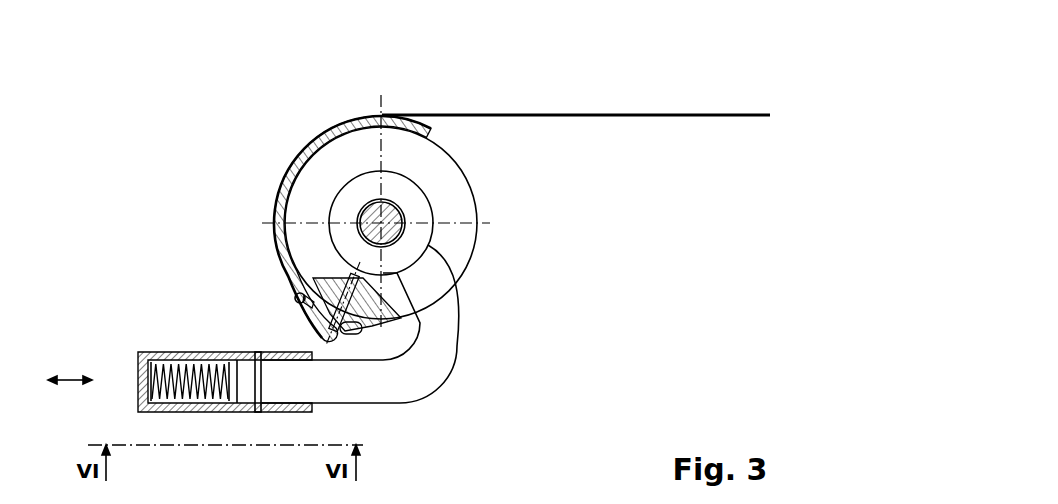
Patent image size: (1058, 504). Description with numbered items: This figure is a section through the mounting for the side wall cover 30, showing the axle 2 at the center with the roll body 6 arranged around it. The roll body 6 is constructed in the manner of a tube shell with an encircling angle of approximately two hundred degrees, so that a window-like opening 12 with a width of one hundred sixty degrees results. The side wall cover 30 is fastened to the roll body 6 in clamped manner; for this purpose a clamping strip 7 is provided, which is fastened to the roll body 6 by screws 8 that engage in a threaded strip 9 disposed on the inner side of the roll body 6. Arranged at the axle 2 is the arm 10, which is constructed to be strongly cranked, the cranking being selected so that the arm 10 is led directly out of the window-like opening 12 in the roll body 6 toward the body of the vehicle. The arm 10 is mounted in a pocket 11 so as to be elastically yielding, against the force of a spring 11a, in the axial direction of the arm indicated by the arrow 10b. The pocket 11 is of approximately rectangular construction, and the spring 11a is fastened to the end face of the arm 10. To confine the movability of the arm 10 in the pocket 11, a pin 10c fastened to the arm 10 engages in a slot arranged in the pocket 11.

The axle 2 is at (408, 207).
The roll body 6 is at (352, 118).
The clamping strip 7 is at (298, 298).
The screws 8 is at (332, 342).
The threaded strip 9 is at (410, 316).
The arm 10 is at (424, 374).
The arrow 10b is at (68, 380).
The pin 10c is at (255, 352).
The pocket 11 is at (184, 352).
The spring 11a is at (150, 366).
The window-like opening 12 is at (465, 164).
The side wall cover 30 is at (622, 115).